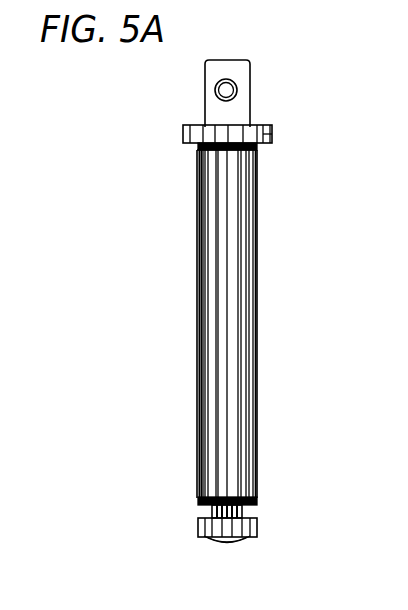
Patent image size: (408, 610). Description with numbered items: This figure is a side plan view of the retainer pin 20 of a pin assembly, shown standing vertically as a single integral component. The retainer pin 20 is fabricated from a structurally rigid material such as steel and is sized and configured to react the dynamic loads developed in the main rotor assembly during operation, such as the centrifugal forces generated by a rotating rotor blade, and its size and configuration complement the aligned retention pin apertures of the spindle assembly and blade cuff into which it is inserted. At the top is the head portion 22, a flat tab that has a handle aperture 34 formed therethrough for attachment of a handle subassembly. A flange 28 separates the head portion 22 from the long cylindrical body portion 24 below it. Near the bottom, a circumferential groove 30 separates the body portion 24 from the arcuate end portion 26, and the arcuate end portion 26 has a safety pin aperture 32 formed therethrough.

The retainer pin 20 is at (277, 290).
The head portion 22 is at (260, 105).
The body portion 24 is at (188, 298).
The arcuate end portion 26 is at (210, 544).
The flange 28 is at (273, 135).
The circumferential groove 30 is at (245, 513).
The safety pin aperture 32 is at (254, 528).
The handle aperture 34 is at (240, 80).